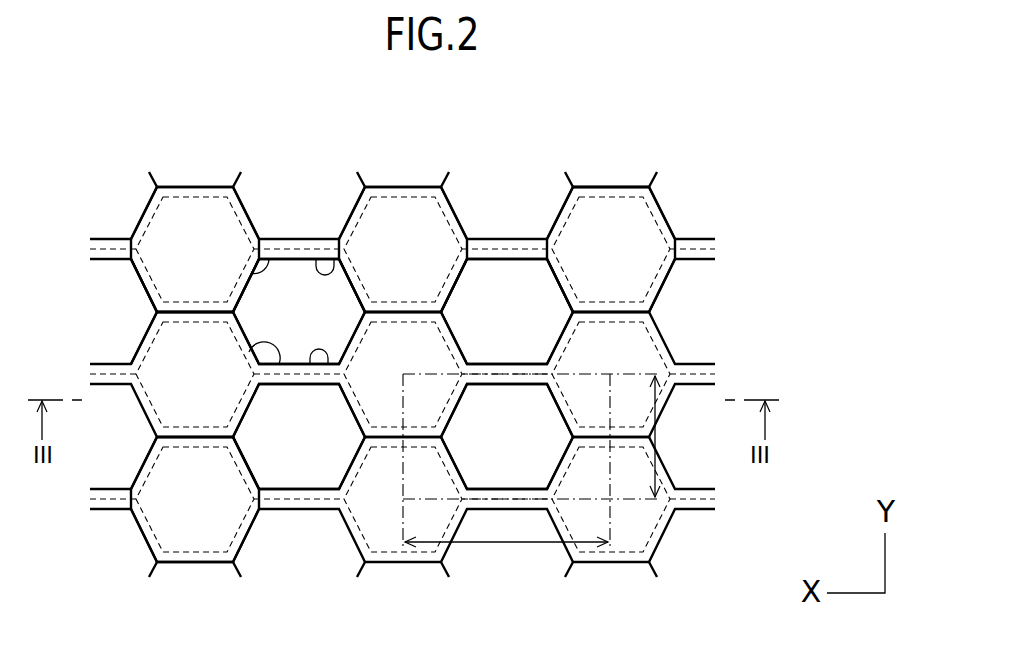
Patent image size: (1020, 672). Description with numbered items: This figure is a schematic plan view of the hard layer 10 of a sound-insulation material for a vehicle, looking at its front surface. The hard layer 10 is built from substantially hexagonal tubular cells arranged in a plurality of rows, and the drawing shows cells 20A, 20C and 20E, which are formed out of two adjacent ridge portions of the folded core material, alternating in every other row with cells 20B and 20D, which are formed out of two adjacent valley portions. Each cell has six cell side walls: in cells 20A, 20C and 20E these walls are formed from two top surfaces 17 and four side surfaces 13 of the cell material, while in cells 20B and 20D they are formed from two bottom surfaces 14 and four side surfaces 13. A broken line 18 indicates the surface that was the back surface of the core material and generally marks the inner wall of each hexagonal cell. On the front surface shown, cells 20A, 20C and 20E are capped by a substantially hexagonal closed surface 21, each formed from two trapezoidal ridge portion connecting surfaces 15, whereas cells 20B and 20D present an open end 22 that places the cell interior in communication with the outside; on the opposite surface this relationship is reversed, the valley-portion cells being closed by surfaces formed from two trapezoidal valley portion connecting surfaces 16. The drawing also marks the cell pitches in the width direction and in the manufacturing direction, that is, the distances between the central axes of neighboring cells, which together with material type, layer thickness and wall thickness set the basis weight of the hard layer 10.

The hard layer 10 is at (736, 190).
The side surface 13 is at (270, 260).
The bottom surface 14 is at (332, 260).
The ridge portion connecting surface 15 is at (194, 212).
The valley portion connecting surface 16 is at (297, 306).
The top surface 17 is at (160, 313).
The broken line 18 is at (610, 187).
The cell 20A is at (187, 508).
The cell 20B is at (263, 437).
The cell 20C is at (405, 233).
The cell 20D is at (510, 297).
The cell 20E is at (617, 253).
The closed surface 21 is at (625, 523).
The open end 22 is at (508, 422).